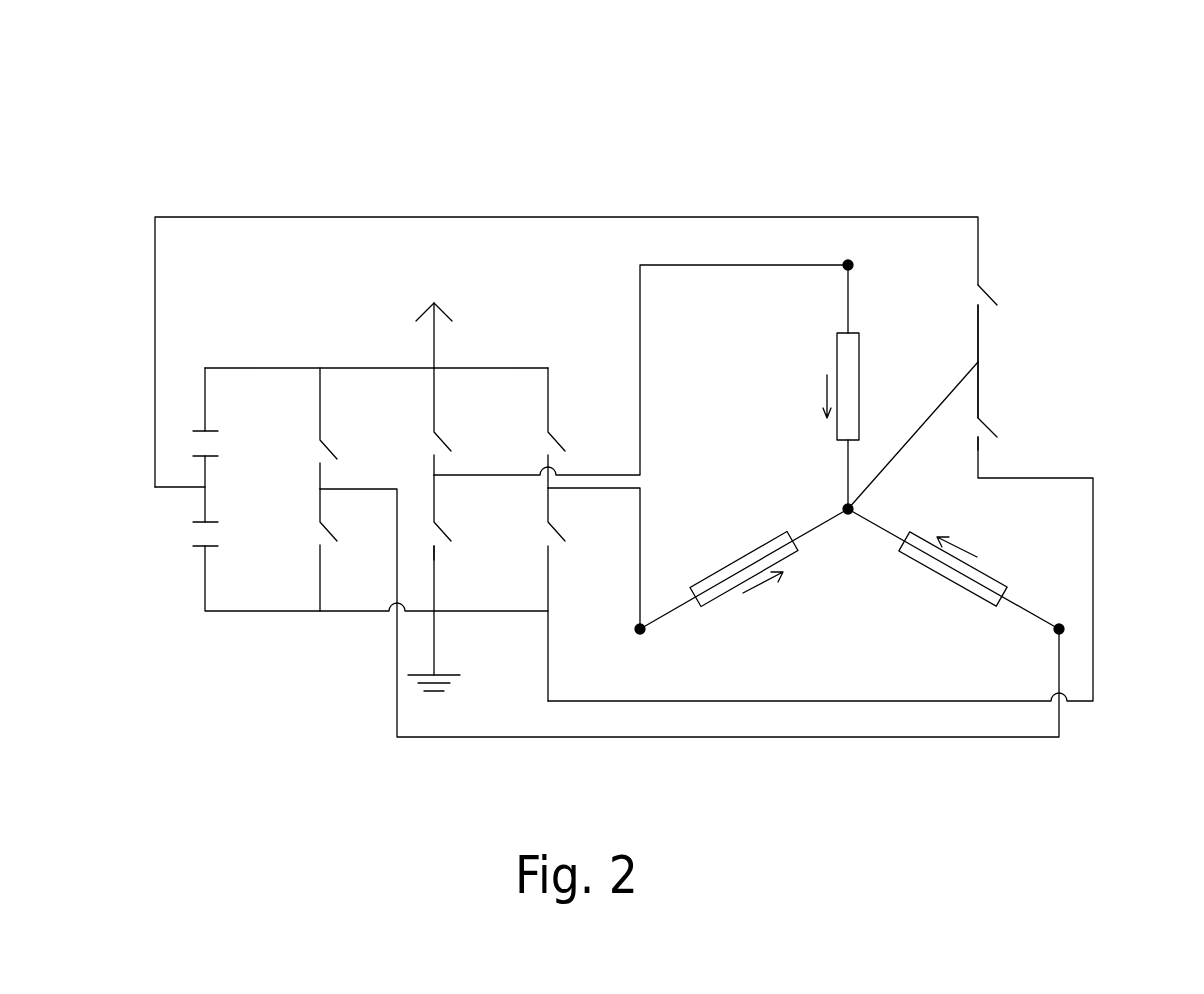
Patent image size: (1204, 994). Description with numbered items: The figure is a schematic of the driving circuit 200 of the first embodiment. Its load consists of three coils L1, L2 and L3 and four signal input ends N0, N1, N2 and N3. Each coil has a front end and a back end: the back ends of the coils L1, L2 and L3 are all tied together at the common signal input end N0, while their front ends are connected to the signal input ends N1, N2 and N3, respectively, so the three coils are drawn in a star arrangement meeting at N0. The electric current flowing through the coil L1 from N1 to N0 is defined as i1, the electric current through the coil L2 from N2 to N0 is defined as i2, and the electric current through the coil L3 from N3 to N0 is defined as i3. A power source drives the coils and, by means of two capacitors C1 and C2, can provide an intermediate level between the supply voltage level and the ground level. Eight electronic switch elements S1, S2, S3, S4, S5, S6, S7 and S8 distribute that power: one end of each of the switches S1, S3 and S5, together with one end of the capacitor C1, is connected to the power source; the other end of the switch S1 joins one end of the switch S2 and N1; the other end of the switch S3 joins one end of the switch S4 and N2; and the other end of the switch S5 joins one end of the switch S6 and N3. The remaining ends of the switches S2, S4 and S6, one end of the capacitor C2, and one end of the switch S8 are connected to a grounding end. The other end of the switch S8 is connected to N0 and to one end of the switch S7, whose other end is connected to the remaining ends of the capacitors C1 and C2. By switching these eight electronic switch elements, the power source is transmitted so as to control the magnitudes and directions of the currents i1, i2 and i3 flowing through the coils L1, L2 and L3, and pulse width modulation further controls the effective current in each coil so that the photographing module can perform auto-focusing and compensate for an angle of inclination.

The driving circuit 200 is at (1090, 158).
The capacitor C1 is at (228, 442).
The capacitor C2 is at (228, 532).
The electronic switch element S1 is at (348, 428).
The electronic switch element S2 is at (348, 550).
The electronic switch element S3 is at (462, 421).
The electronic switch element S4 is at (462, 517).
The electronic switch element S5 is at (577, 428).
The electronic switch element S6 is at (577, 594).
The electronic switch element S7 is at (1007, 322).
The electronic switch element S8 is at (1007, 406).
The coil L1 is at (953, 569).
The coil L2 is at (866, 386).
The coil L3 is at (744, 569).
The signal input end N0 is at (866, 509).
The signal input end N1 is at (1041, 637).
The signal input end N2 is at (867, 267).
The signal input end N3 is at (658, 639).
The electric current i1 is at (957, 538).
The electric current i2 is at (816, 396).
The electric current i3 is at (763, 594).